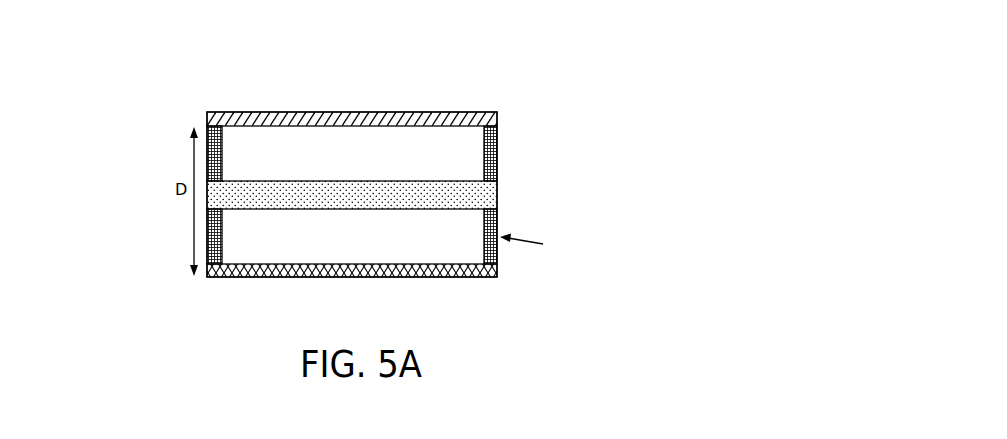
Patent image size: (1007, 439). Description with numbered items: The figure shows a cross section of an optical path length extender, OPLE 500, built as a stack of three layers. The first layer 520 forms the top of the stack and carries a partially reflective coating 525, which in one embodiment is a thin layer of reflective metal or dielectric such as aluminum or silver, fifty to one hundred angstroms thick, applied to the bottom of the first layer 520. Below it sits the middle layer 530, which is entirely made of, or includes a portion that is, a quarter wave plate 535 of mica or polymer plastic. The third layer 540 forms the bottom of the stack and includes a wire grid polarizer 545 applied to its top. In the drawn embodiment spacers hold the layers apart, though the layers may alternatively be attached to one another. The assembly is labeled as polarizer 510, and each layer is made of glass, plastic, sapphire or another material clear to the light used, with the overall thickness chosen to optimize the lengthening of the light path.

The OPLE 500 is at (552, 201).
The polarizer 510 is at (582, 201).
The first layer 520 is at (526, 120).
The partially reflective coating 525 is at (512, 119).
The middle layer 530 is at (582, 201).
The quarter wave plate 535 is at (513, 196).
The third layer 540 is at (477, 311).
The wire grid polarizer 545 is at (477, 311).